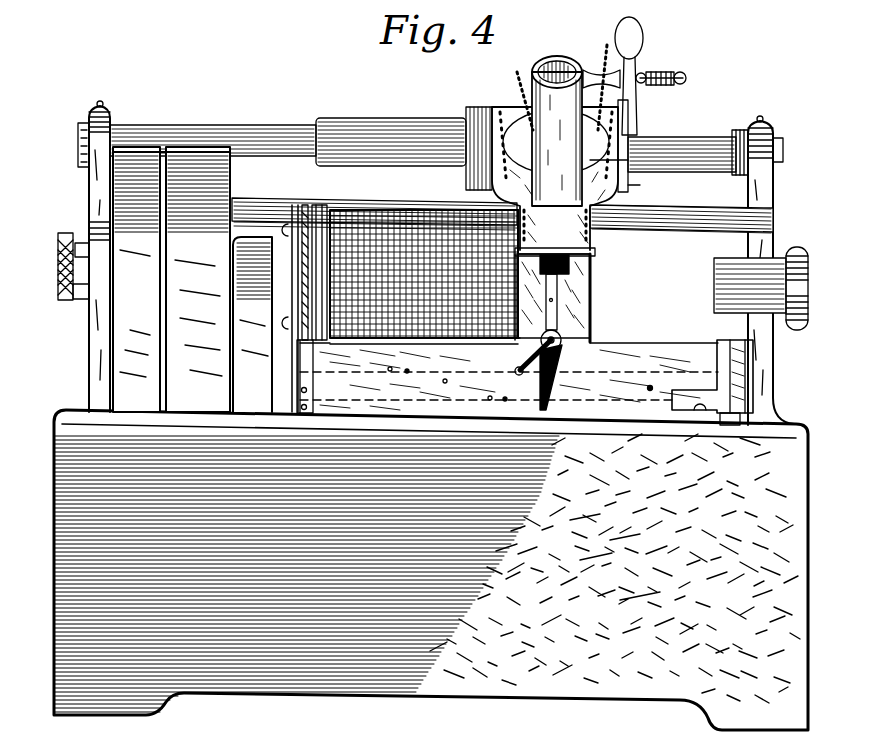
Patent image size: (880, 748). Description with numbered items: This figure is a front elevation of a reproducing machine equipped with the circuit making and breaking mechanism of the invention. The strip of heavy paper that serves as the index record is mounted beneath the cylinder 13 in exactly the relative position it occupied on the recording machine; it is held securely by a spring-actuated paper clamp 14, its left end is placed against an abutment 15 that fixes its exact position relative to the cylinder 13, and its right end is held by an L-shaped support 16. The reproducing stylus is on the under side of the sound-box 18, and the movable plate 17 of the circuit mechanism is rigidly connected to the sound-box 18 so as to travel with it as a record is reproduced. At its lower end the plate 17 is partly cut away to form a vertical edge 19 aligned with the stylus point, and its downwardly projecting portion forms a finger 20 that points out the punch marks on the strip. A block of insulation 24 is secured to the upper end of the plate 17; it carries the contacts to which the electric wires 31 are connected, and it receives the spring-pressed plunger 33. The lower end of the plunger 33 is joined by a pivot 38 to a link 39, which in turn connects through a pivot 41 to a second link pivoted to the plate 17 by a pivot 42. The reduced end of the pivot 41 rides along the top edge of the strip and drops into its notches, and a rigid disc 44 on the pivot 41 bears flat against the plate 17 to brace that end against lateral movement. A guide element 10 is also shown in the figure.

The guide rail 10 is at (500, 336).
The cylinder 13 is at (424, 274).
The spring-actuated paper clamp 14 is at (304, 410).
The abutment 15 is at (293, 383).
The L-shaped support 16 is at (730, 398).
The plate 17 is at (512, 290).
The sound-box 18 is at (628, 190).
The vertical edge 19 is at (553, 382).
The finger 20 is at (540, 382).
The block of insulation 24 is at (512, 266).
The electric wires 31 is at (610, 51).
The plunger 33 is at (591, 284).
The pivot 38 is at (591, 302).
The link 39 is at (591, 321).
The pivot 41 is at (515, 312).
The pivot 42 is at (506, 366).
The rigid disc 44 is at (560, 345).